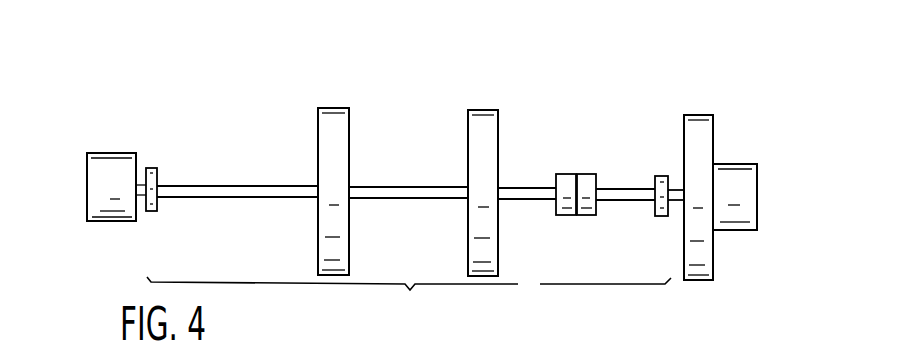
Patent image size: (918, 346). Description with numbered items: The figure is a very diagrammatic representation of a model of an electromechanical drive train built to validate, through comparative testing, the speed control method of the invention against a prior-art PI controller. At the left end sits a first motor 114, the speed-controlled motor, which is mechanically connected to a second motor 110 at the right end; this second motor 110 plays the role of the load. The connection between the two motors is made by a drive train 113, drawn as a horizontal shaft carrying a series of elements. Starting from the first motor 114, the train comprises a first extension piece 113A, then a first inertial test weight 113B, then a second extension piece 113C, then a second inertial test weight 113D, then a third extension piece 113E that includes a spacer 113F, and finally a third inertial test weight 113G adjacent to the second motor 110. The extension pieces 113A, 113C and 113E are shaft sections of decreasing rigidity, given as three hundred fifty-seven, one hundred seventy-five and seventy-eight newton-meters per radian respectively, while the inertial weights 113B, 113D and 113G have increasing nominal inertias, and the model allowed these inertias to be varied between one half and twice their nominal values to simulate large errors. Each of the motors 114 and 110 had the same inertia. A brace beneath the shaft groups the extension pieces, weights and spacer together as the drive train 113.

The second motor 110 is at (740, 224).
The drive train 113 is at (409, 296).
The first extension piece 113A is at (224, 186).
The first inertial test weight 113B is at (337, 112).
The second extension piece 113C is at (390, 187).
The second inertial test weight 113D is at (480, 113).
The third extension piece 113E is at (527, 188).
The spacer 113F is at (585, 176).
The third inertial test weight 113G is at (697, 121).
The first motor 114 is at (105, 157).